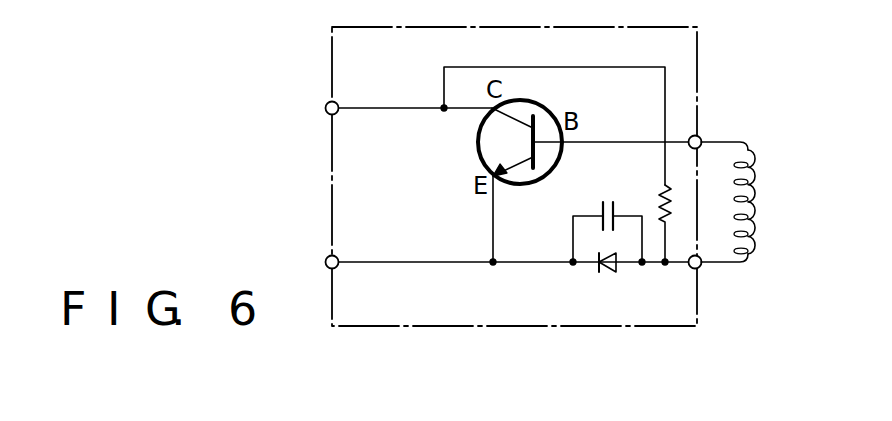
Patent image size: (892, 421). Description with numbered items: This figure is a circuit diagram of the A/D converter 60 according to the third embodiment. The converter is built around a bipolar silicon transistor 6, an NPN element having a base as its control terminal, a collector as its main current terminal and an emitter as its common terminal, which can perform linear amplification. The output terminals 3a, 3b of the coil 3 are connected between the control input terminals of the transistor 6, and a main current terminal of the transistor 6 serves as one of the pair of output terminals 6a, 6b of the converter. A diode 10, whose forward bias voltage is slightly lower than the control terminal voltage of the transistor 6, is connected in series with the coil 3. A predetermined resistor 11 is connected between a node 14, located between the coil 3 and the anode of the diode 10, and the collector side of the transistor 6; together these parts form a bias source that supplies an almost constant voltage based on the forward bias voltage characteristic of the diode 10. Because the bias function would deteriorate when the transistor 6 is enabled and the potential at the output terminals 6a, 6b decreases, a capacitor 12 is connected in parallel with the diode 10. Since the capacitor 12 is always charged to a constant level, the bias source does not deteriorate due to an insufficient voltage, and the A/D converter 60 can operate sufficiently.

The coil 3 is at (752, 178).
The output terminal of the coil 3a is at (701, 136).
The output terminal of the coil 3b is at (701, 268).
The bipolar silicon transistor 6 is at (478, 153).
The output terminal 6a is at (325, 259).
The output terminal 6b is at (323, 104).
The diode 10 is at (600, 270).
The resistor 11 is at (660, 186).
The capacitor 12 is at (603, 206).
The node 14 is at (663, 265).
The A/D converter 60 is at (476, 327).